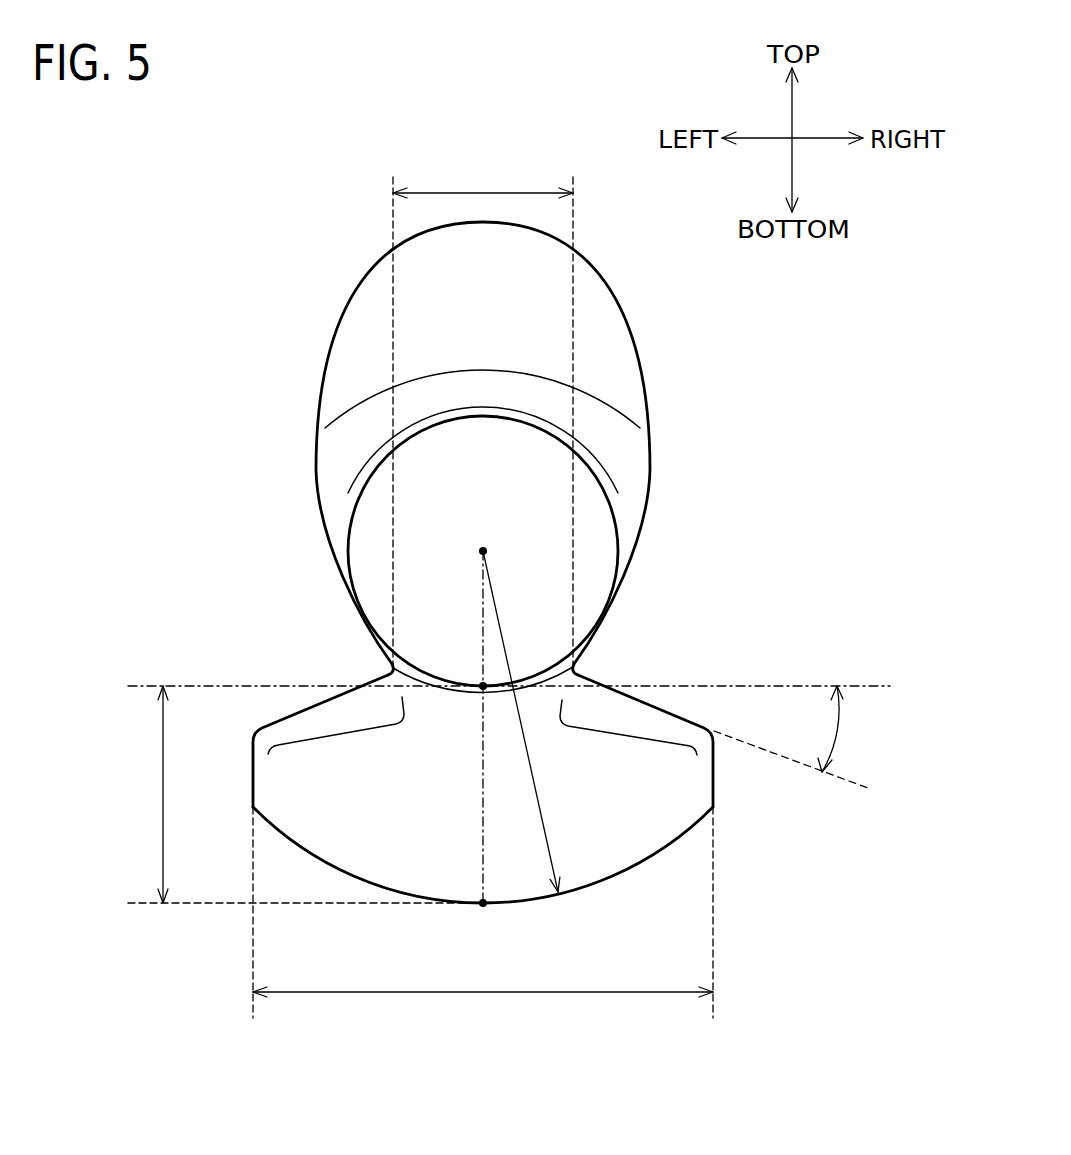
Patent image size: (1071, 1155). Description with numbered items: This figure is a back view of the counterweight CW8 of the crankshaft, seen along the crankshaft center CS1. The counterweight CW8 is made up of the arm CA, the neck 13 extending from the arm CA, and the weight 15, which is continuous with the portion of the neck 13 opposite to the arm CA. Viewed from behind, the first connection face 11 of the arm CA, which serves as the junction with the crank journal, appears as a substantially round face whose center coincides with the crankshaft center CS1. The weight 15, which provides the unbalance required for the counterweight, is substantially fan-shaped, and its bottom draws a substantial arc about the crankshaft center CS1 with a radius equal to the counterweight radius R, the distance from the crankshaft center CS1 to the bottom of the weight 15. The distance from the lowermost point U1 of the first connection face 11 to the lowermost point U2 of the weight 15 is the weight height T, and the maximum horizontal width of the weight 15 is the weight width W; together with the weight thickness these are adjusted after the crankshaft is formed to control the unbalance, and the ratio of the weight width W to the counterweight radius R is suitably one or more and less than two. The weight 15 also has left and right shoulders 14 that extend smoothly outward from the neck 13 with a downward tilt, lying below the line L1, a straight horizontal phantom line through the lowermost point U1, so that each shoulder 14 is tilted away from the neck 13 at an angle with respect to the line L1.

The counterweight CW8 is at (315, 298).
The arm CA is at (622, 372).
The first connection face 11 is at (588, 588).
The neck 13 is at (392, 668).
The shoulders 14 is at (288, 717).
The weight 15 is at (603, 862).
The crankshaft center CS1 is at (484, 549).
The lowermost point of the first connection face U1 is at (482, 683).
The lowermost point of the weight U2 is at (481, 901).
The line L1 is at (732, 686).
The counterweight radius R is at (532, 762).
The height dimension h is at (483, 412).
The weight height T is at (305, 794).
The weight width W is at (483, 920).